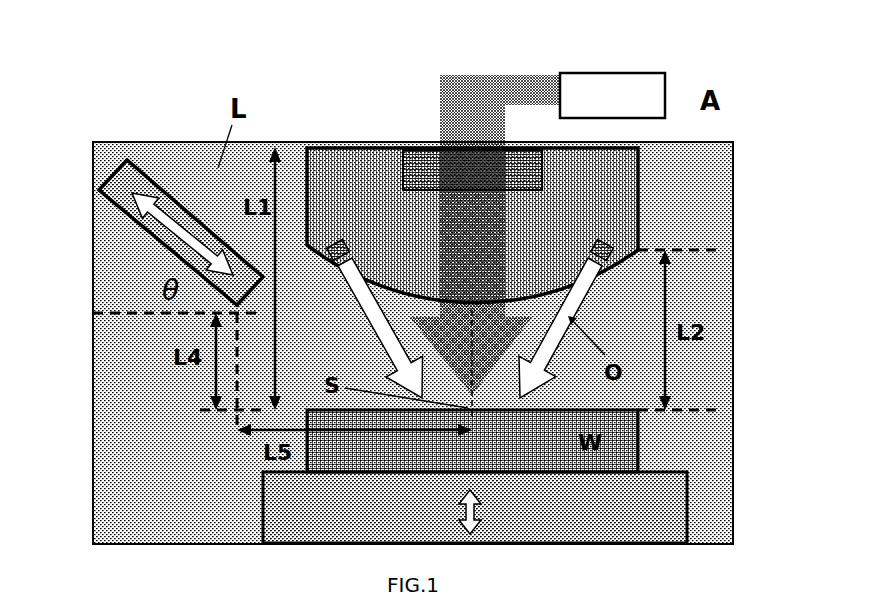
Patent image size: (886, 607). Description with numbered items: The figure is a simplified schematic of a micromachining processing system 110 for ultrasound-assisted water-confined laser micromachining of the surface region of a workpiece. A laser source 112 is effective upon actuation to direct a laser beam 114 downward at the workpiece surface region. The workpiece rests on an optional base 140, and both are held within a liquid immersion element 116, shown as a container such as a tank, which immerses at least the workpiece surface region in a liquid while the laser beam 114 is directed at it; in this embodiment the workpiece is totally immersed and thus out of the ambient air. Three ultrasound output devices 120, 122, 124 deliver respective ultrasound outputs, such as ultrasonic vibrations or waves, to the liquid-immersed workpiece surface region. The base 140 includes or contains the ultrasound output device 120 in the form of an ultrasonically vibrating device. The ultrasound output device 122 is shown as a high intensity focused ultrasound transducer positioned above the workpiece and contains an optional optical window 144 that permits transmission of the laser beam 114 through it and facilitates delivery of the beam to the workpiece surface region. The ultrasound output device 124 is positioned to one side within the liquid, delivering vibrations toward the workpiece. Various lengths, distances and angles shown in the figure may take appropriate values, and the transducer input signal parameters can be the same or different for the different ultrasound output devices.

The system 110 is at (775, 335).
The laser source 112 is at (612, 95).
The laser beam 114 is at (485, 235).
The liquid immersion element 116 is at (86, 394).
The ultrasound output device 120 is at (450, 511).
The ultrasound output device 122 is at (472, 225).
The ultrasound output device 124 is at (133, 168).
The base 140 is at (475, 507).
The optical window 144 is at (417, 158).